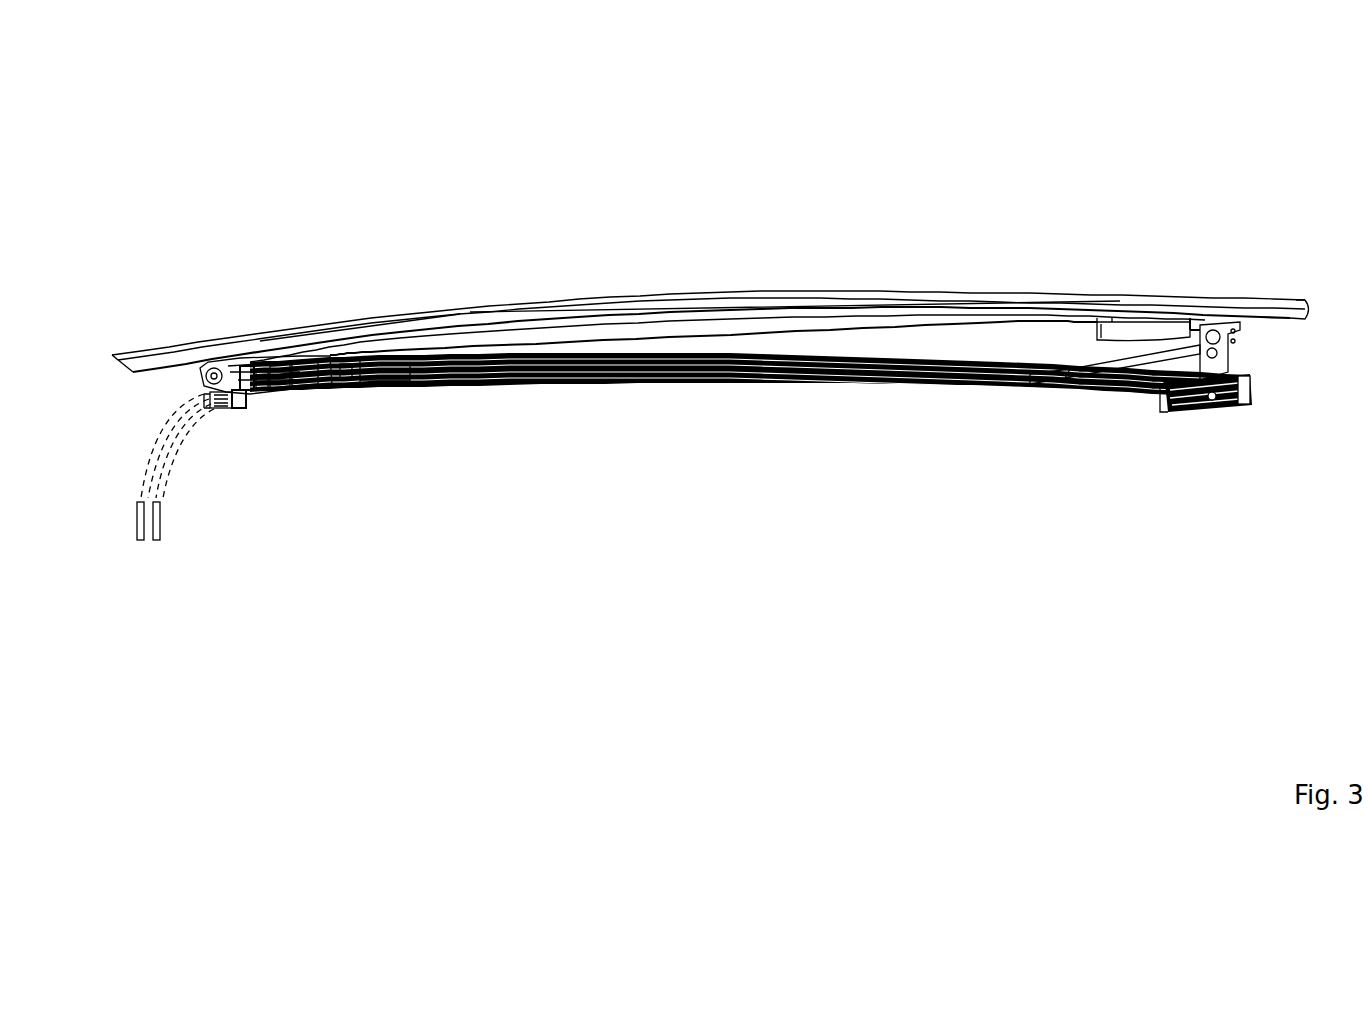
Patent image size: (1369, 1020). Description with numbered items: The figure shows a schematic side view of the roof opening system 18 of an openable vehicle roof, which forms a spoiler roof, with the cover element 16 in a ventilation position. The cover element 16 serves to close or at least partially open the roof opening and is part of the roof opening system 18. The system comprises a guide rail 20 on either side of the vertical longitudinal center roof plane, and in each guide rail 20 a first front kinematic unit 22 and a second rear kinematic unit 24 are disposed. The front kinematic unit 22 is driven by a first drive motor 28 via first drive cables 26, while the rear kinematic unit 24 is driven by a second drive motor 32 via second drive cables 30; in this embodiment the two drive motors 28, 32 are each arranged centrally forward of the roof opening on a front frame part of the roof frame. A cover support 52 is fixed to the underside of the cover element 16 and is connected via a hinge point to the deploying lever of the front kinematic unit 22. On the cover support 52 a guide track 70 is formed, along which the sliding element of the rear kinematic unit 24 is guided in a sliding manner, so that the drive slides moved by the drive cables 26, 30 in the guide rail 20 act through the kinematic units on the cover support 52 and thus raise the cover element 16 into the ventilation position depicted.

The cover element 16 is at (665, 292).
The roof opening system 18 is at (228, 183).
The guide rail 20 is at (660, 386).
The first front kinematic unit 22 is at (250, 396).
The second rear kinematic unit 24 is at (1235, 366).
The first drive cable 26 is at (143, 472).
The first drive motor 28 is at (135, 535).
The second drive cable 30 is at (168, 472).
The second drive motor 32 is at (153, 539).
The cover support 52 is at (1118, 330).
The guide track 70 is at (1132, 333).